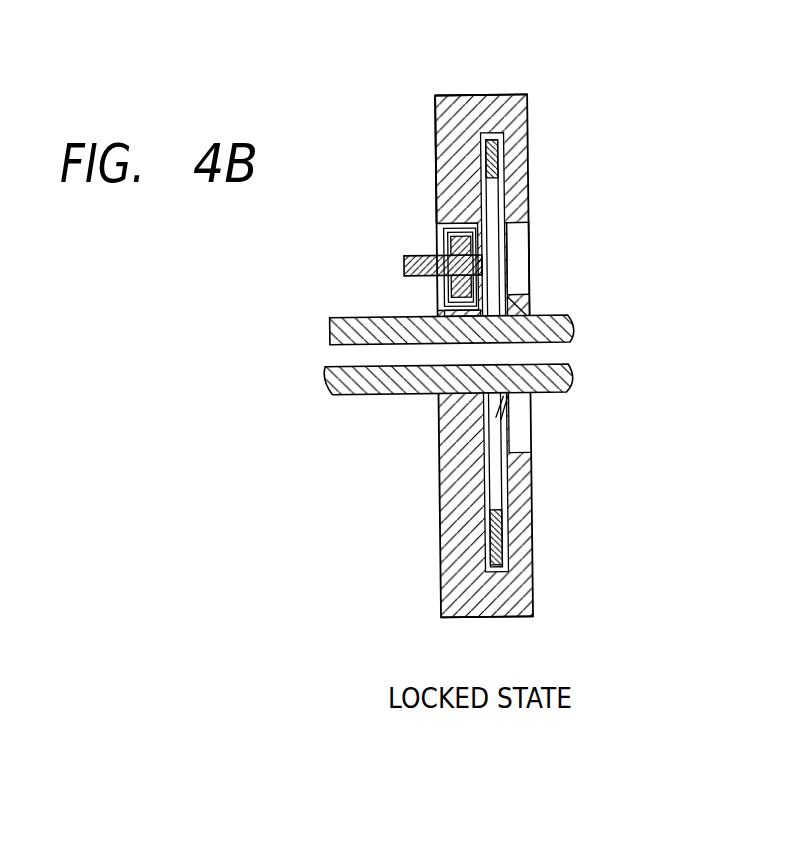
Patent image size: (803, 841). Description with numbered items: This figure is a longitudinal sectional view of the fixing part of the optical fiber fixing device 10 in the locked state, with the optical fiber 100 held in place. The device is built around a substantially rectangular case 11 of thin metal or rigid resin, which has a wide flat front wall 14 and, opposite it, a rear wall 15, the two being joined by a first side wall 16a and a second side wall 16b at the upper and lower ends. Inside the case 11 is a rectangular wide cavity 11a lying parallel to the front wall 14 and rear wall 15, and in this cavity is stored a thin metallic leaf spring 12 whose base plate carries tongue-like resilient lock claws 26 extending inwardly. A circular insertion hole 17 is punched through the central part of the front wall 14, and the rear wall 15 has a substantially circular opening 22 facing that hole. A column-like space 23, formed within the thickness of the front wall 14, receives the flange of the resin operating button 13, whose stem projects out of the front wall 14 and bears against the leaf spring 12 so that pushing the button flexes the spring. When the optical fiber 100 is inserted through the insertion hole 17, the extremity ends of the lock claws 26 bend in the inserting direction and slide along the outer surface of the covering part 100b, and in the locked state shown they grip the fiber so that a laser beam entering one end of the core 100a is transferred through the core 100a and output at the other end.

The optical fiber fixing device 10 is at (518, 84).
The case 11 is at (530, 133).
The cavity 11a is at (488, 186).
The leaf spring 12 is at (505, 190).
The operating button 13 is at (405, 259).
The front wall 14 is at (437, 201).
The rear wall 15 is at (525, 218).
The first side wall 16a is at (453, 95).
The second side wall 16b is at (463, 617).
The insertion hole 17 is at (440, 316).
The opening 22 is at (530, 243).
The space 23 is at (462, 232).
The lock claw 26 is at (513, 398).
The optical fiber 100 is at (502, 378).
The core 100a is at (568, 352).
The covering part 100b is at (572, 324).